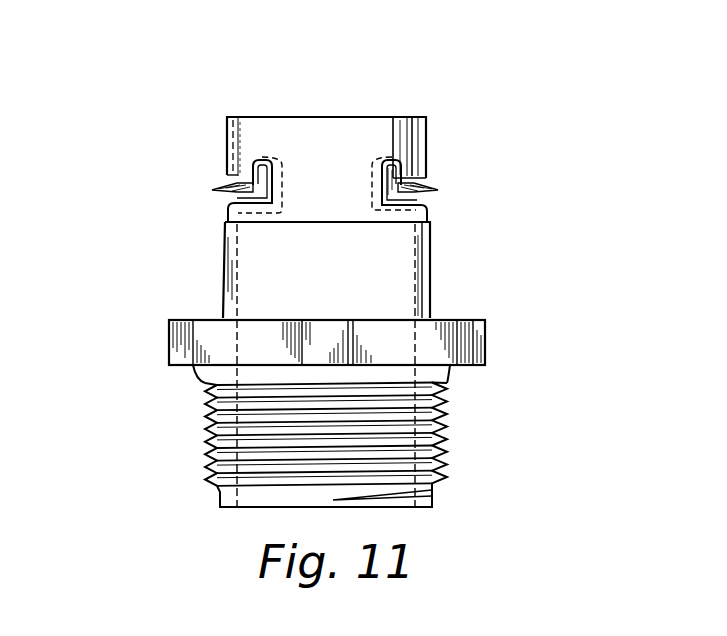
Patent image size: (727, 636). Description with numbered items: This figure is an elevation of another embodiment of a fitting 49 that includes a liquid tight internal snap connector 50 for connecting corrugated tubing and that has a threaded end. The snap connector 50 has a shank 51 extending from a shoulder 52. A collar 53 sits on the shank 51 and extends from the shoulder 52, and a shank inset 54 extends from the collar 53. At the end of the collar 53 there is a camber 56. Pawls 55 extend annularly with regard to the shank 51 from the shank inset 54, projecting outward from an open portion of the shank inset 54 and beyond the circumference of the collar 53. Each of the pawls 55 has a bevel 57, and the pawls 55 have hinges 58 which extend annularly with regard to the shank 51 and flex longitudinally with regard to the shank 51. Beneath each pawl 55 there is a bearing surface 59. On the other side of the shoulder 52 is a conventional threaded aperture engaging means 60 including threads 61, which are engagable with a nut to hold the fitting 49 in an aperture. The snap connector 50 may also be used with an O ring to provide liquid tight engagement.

The fitting 49 is at (182, 392).
The snap connector 50 is at (440, 255).
The shank 51 is at (335, 163).
The shoulder 52 is at (478, 320).
The collar 53 is at (428, 291).
The shank inset 54 is at (427, 150).
The pawls 55 is at (430, 187).
The camber 56 is at (427, 215).
The bevels 57 is at (222, 180).
The hinges 58 is at (243, 178).
The bearing surfaces 59 is at (222, 191).
The threaded aperture engaging means 60 is at (460, 416).
The threads 61 is at (450, 465).